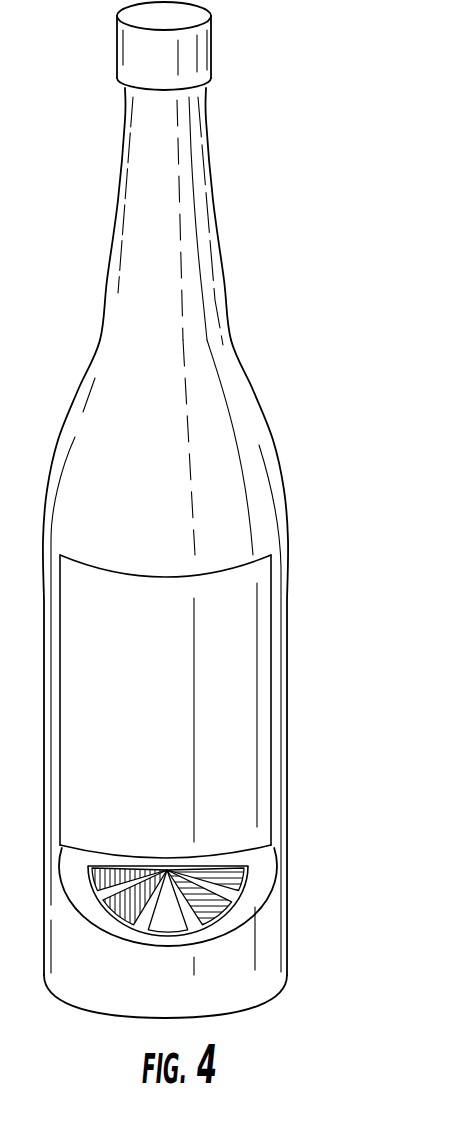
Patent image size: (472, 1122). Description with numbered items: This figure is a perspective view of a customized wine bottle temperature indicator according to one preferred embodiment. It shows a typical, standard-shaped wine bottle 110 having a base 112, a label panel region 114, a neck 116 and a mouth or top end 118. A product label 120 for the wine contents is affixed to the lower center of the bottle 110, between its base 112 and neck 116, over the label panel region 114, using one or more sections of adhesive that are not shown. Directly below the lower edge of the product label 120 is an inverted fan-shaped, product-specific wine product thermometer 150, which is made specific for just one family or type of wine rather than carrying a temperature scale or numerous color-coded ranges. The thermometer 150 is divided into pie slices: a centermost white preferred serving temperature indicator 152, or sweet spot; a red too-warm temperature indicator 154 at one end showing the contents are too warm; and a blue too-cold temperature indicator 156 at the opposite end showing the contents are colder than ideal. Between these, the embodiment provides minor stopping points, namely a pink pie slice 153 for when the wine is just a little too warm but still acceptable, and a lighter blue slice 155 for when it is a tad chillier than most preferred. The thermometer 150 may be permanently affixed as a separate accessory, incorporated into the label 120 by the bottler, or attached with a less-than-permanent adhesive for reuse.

The wine bottle 110 is at (202, 514).
The base 112 is at (275, 993).
The label panel region 114 is at (193, 657).
The neck 116 is at (208, 195).
The mouth or top end 118 is at (200, 53).
The product label 120 is at (167, 697).
The wine product thermometer 150 is at (202, 898).
The preferred serving temperature indicator 152 is at (158, 935).
The pink pie slice 153 is at (113, 918).
The too-warm temperature indicator 154 is at (113, 862).
The lighter blue slice 155 is at (212, 923).
The too-cold temperature indicator 156 is at (228, 862).